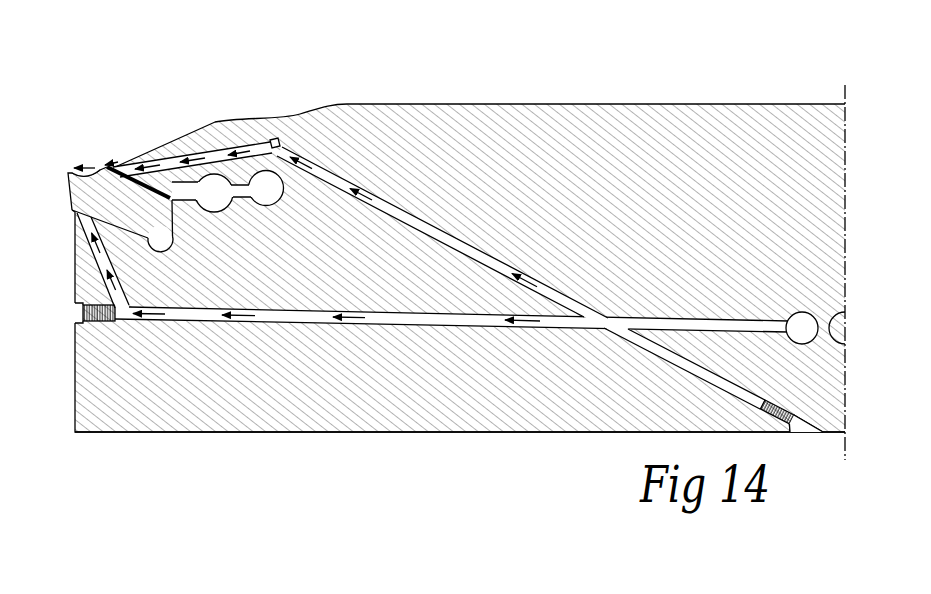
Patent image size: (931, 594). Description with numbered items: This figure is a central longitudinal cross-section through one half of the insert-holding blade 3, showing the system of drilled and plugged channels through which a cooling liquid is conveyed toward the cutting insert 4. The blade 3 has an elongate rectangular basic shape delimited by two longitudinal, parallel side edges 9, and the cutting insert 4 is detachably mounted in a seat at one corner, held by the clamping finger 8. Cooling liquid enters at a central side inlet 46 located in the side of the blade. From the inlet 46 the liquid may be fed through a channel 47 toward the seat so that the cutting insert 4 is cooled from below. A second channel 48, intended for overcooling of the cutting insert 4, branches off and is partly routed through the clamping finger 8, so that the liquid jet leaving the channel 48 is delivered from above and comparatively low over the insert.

The insert-holding blade 3 is at (470, 100).
The cutting insert 4 is at (58, 187).
The clamping finger 8 is at (160, 143).
The longitudinal side edges 9 is at (627, 104).
The central side inlet 46 is at (800, 326).
The channel 47 is at (97, 268).
The overcooling channel 48 is at (260, 148).